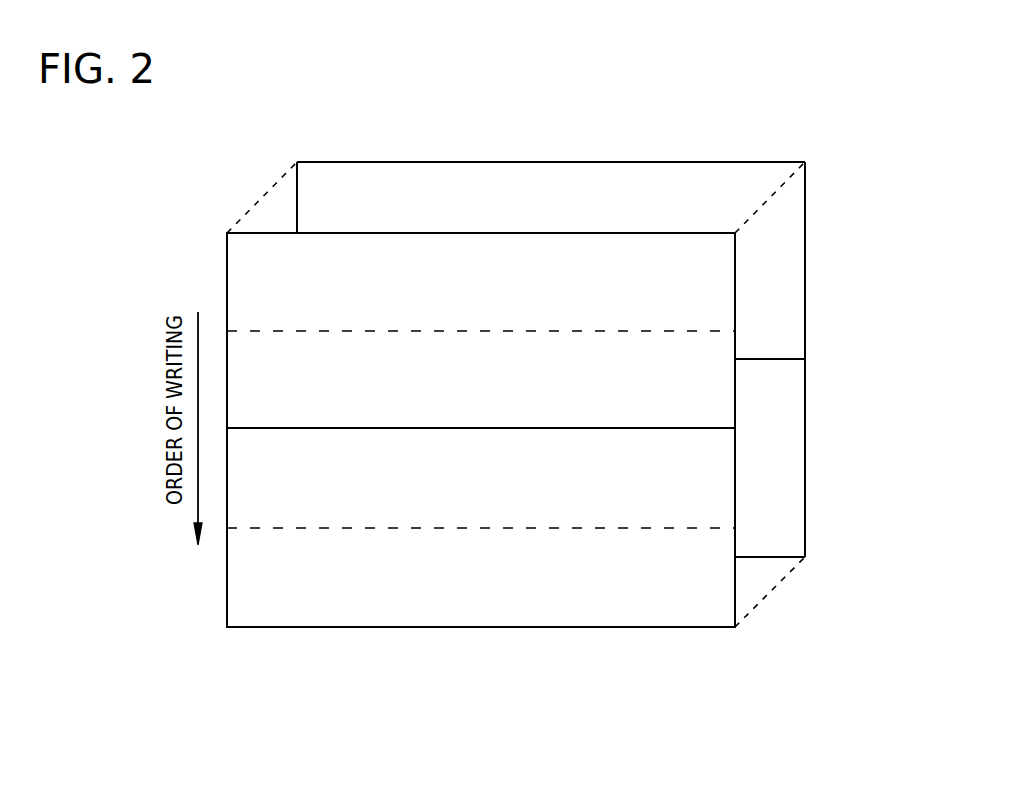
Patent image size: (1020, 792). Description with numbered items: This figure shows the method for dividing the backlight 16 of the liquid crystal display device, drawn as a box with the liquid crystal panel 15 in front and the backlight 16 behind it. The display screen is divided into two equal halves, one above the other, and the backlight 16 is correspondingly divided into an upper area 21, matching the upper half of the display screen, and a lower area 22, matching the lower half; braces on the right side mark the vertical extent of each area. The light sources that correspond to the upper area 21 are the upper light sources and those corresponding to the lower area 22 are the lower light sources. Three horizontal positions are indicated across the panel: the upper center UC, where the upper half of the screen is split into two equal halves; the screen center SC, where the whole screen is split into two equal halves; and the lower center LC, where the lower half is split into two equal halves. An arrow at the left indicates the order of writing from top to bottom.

The liquid crystal panel 15 is at (482, 628).
The backlight 16 is at (550, 161).
The upper area 21 is at (811, 162).
The lower area 22 is at (811, 359).
The upper center UC is at (482, 331).
The screen center SC is at (482, 428).
The lower center LC is at (482, 528).